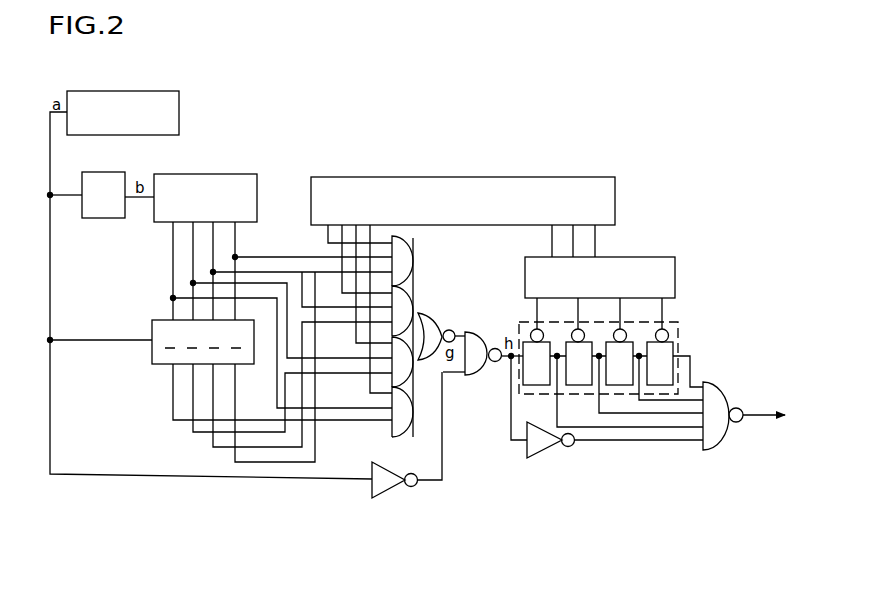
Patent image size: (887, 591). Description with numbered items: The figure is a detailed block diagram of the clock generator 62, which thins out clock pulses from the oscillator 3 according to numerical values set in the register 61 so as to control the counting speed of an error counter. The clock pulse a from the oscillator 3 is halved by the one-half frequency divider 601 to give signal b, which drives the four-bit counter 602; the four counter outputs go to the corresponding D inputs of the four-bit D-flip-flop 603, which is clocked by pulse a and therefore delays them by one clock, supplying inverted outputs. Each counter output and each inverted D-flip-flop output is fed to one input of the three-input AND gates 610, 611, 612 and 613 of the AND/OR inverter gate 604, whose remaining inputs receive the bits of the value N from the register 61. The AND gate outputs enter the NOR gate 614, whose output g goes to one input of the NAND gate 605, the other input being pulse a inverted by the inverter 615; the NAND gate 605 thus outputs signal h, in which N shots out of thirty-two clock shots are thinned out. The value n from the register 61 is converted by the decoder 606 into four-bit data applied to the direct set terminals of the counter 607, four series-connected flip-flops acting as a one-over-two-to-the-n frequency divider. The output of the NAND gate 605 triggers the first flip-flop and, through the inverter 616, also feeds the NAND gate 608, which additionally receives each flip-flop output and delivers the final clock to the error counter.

The oscillator 3 is at (154, 92).
The ½ frequency divider 601 is at (113, 173).
The 4-bit counter 602 is at (235, 174).
The 4-bit D-flip-flop 603 is at (152, 347).
The register 61 is at (507, 177).
The clock generator 62 is at (40, 380).
The AND/OR inverter gate 604 is at (451, 345).
The NAND gate 605 is at (477, 376).
The decoder 606 is at (637, 257).
The counter 607 is at (678, 323).
The NAND gate 608 is at (723, 391).
The 3-input AND gate 610 is at (403, 425).
The 3-input AND gate 611 is at (403, 382).
The 3-input AND gate 612 is at (403, 305).
The 3-input AND gate 613 is at (405, 248).
The 4-input NOR gate 614 is at (430, 327).
The inverter 615 is at (382, 487).
The inverter 616 is at (548, 450).